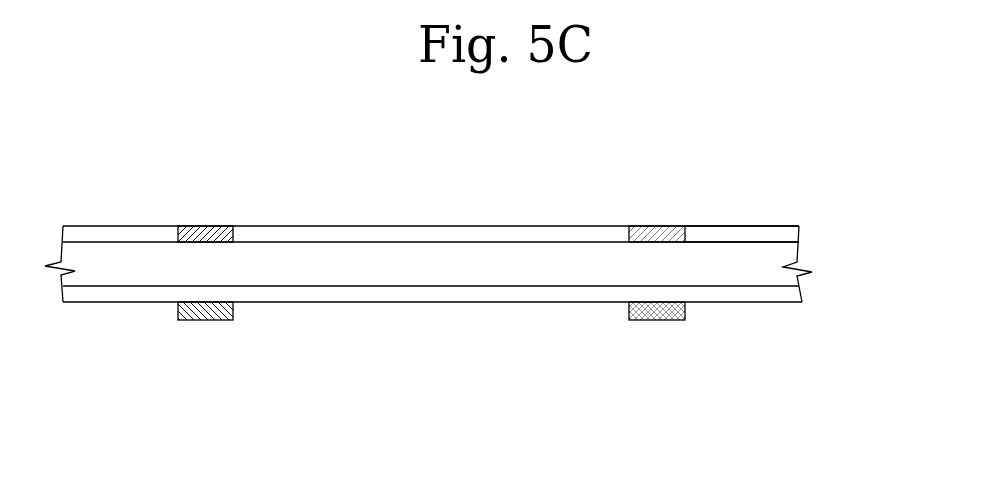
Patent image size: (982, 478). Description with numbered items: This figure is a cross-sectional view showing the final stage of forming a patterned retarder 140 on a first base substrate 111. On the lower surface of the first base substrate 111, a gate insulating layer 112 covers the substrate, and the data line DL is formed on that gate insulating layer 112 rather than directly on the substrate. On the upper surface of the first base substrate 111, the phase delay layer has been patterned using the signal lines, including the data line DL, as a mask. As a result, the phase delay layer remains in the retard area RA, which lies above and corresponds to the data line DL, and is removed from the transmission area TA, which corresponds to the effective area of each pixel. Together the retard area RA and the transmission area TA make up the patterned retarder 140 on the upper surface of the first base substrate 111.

The patterned retarder 140 is at (431, 181).
The retard area RA is at (675, 226).
The transmission area TA is at (685, 156).
The first base substrate 111 is at (793, 257).
The gate insulating layer 112 is at (795, 295).
The data line DL is at (203, 310).